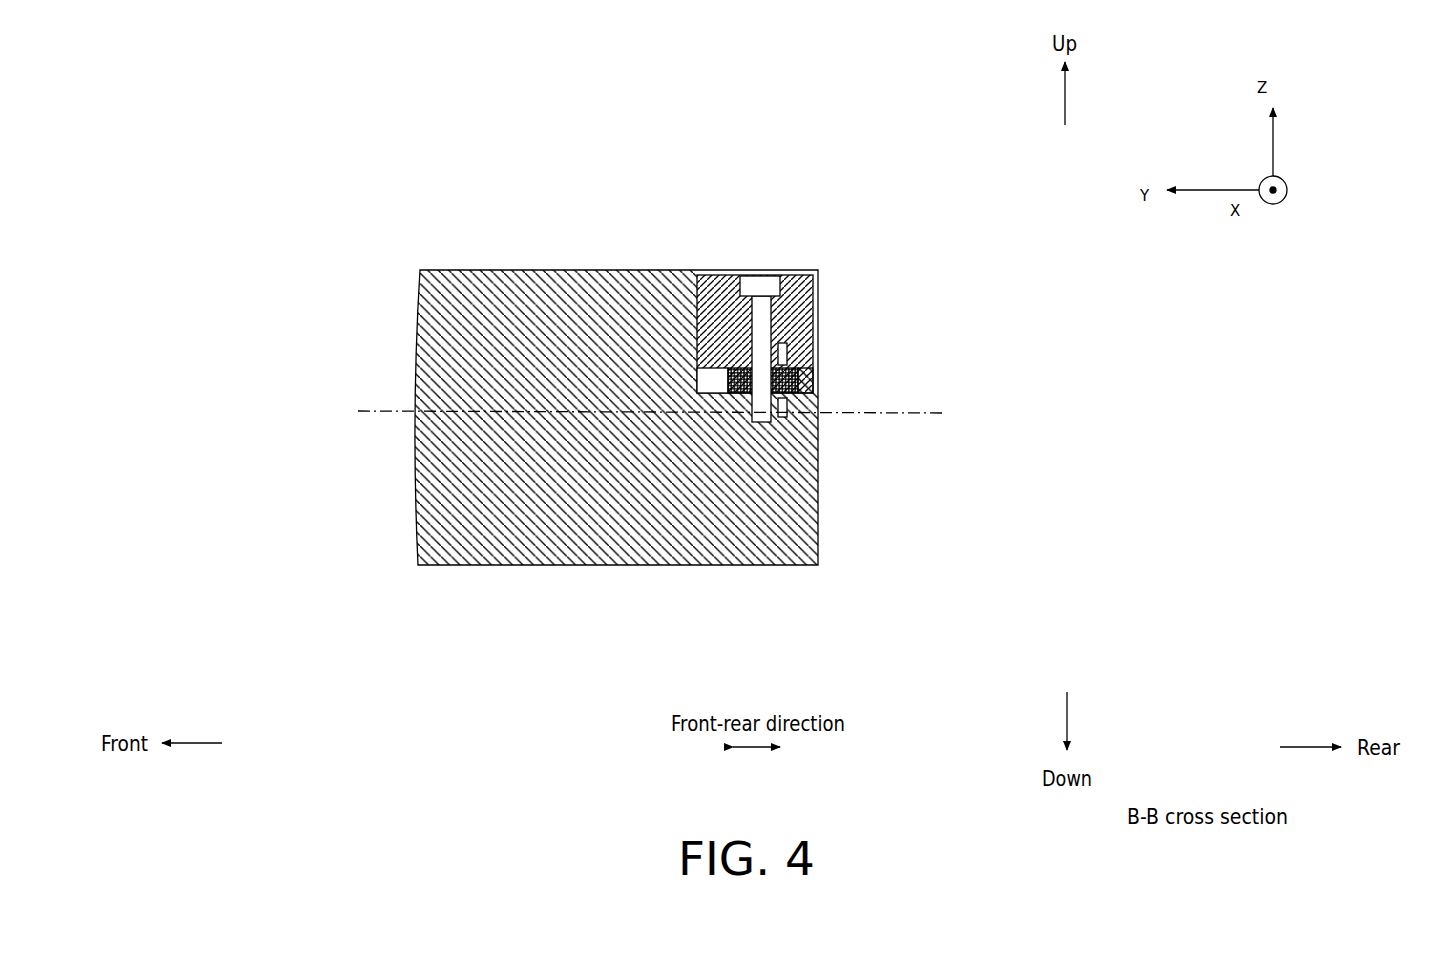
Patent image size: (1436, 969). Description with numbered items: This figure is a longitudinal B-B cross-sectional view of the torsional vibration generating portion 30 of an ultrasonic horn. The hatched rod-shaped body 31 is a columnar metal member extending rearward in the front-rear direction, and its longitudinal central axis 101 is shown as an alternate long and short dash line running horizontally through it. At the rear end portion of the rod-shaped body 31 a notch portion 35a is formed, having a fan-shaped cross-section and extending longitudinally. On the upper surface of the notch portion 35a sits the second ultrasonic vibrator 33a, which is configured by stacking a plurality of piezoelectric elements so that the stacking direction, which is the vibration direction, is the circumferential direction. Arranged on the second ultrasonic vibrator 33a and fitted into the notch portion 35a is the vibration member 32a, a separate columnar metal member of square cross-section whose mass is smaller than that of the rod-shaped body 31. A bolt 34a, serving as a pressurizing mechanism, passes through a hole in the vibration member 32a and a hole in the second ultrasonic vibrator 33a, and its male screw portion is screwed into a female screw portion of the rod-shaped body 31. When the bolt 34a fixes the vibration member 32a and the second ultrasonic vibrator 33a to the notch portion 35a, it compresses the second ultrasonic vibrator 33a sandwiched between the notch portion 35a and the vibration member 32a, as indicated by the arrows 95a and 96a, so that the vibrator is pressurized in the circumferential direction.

The torsional vibration generating portion 30 is at (322, 136).
The rod-shaped body 31 is at (572, 565).
The vibration member 32a is at (798, 275).
The second ultrasonic vibrator 33a is at (800, 378).
The bolt 34a is at (752, 275).
The notch portion 35a is at (805, 386).
The arrow 95a is at (790, 407).
The arrow 96a is at (790, 350).
The central axis 101 is at (855, 413).